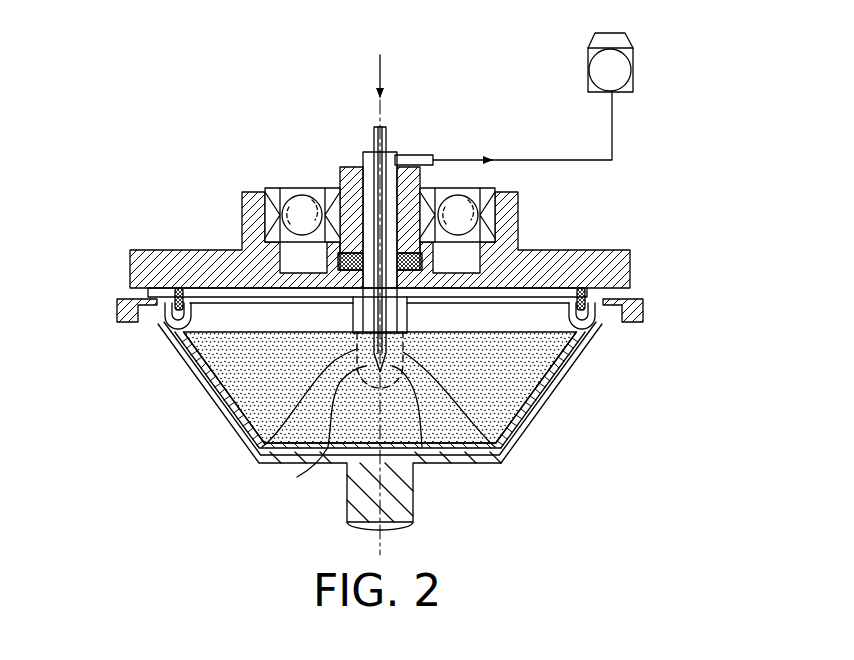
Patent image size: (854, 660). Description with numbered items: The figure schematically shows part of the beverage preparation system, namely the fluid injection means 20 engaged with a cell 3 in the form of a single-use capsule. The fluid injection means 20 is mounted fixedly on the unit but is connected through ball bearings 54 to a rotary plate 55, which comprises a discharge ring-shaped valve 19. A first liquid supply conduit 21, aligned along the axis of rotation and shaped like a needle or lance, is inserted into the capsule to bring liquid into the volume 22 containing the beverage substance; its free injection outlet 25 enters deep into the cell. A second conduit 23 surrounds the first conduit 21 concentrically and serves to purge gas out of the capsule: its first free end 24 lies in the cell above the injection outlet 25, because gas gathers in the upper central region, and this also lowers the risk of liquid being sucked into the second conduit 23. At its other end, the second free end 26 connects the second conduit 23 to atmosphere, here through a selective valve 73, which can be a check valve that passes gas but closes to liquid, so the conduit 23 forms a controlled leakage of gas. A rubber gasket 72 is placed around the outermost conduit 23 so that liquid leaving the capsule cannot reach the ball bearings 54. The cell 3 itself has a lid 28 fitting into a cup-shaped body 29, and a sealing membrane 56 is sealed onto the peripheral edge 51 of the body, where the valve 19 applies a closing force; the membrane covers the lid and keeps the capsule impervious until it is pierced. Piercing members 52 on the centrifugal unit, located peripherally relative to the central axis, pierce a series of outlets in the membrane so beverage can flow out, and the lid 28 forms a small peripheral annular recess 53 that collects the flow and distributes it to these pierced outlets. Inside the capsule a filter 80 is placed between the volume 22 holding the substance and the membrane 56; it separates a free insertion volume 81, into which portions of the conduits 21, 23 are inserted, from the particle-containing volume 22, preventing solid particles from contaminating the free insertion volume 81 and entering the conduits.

The discharge ring-shaped valve 19 is at (112, 268).
The fluid injection means 20 is at (279, 116).
The first liquid supply conduit 21 is at (373, 133).
The volume containing the beverage substance 22 is at (243, 393).
The second conduit 23 is at (388, 150).
The first free end 24 is at (408, 311).
The free injection outlet 25 is at (425, 450).
The second free end 26 is at (430, 155).
The lid 28 is at (539, 308).
The cup-shaped body 29 is at (566, 386).
The cell 3 is at (524, 435).
The peripheral edge 51 is at (647, 302).
The piercing members 52 is at (162, 320).
The peripheral annular recess 53 is at (180, 332).
The ball bearings 54 is at (302, 190).
The rotary plate 55 is at (608, 248).
The sealing membrane 56 is at (622, 288).
The rubber gasket 72 is at (340, 262).
The selective valve 73 is at (632, 70).
The filter 80 is at (297, 477).
The free insertion volume 81 is at (262, 447).